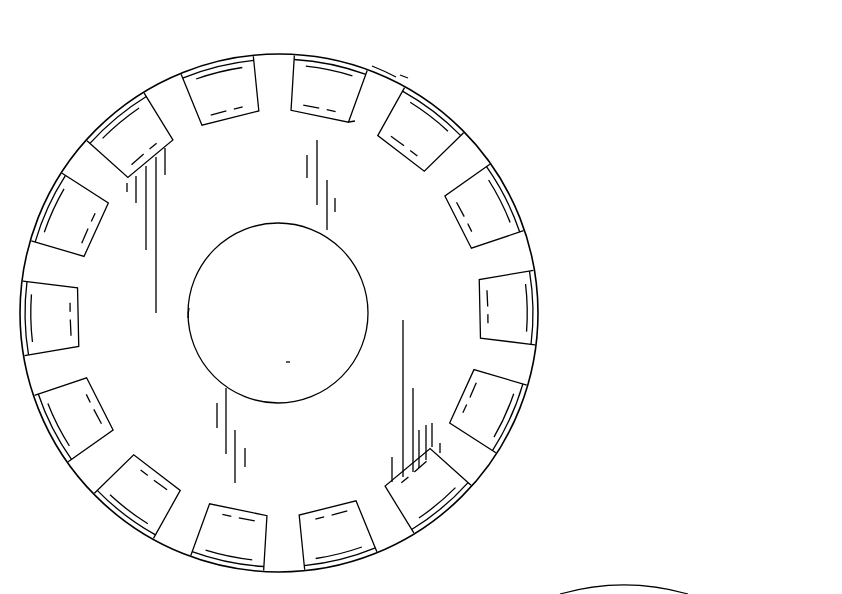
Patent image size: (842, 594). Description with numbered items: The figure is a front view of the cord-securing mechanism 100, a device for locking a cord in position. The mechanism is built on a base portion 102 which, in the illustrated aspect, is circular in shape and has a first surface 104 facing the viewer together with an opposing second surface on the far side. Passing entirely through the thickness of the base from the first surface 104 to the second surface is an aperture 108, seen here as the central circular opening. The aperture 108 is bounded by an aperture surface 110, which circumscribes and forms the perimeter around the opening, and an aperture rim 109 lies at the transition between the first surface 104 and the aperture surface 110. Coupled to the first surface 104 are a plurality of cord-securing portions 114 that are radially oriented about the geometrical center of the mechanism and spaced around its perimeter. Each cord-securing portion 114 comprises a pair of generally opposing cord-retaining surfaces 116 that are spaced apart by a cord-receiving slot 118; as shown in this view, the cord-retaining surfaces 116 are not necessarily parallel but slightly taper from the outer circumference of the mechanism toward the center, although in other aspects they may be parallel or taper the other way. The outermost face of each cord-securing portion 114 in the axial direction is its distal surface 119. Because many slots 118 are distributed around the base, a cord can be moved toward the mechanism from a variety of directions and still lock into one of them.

The cord-securing mechanism 100 is at (106, 94).
The base portion 102 is at (487, 468).
The first surface 104 is at (437, 259).
The aperture 108 is at (298, 354).
The aperture rim 109 is at (190, 320).
The aperture surface 110 is at (292, 272).
The cord-securing portion 114 is at (363, 66).
The cord-retaining surfaces 116 is at (353, 112).
The cord-receiving slot 118 is at (402, 73).
The distal surface 119 is at (141, 501).